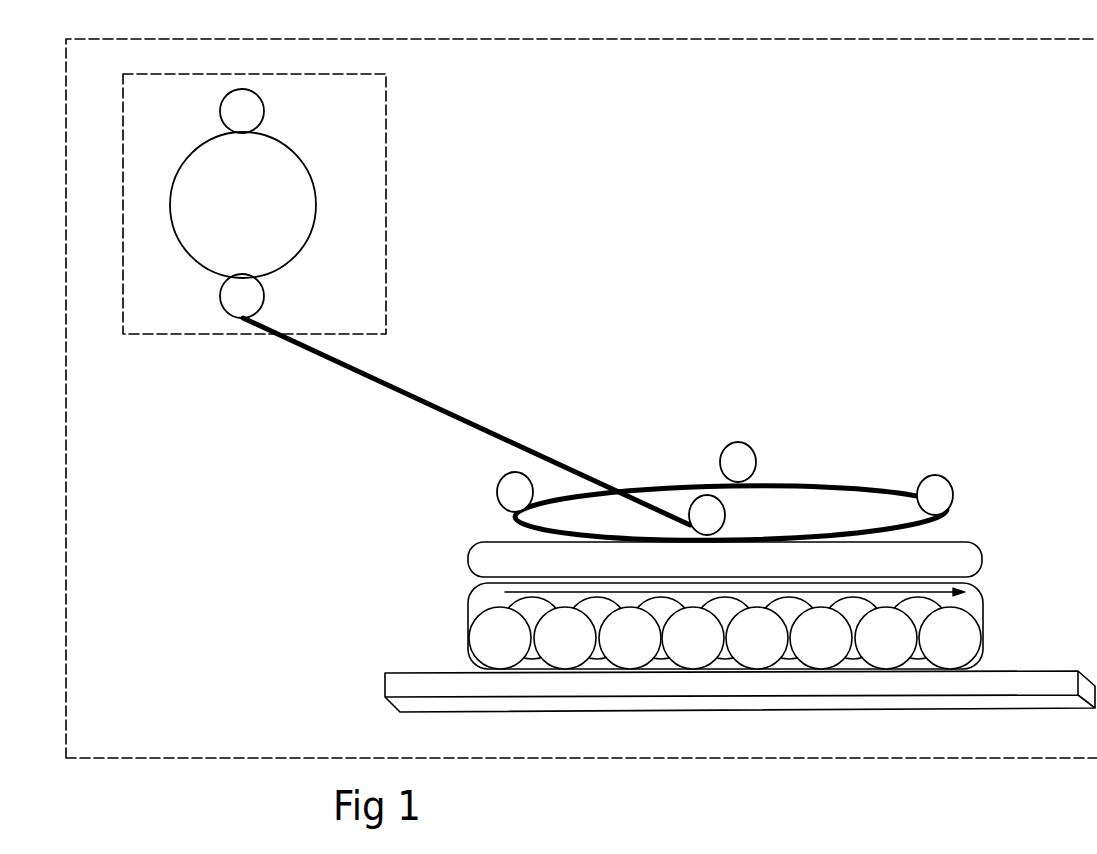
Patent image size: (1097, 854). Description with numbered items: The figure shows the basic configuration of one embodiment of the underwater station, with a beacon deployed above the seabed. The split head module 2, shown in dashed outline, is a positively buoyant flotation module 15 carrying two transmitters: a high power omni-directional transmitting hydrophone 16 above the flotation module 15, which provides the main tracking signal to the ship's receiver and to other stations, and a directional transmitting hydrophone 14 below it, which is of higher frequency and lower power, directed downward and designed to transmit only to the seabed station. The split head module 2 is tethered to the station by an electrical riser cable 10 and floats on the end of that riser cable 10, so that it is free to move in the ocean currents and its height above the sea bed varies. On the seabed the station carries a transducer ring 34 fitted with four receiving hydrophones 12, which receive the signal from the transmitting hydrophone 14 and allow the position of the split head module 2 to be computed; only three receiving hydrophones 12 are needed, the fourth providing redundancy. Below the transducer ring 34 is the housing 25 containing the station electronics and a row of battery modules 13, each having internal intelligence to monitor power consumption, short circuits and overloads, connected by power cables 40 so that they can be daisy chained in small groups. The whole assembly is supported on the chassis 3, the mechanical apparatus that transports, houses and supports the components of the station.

The split head module 2 is at (386, 270).
The chassis 3 is at (1043, 672).
The riser cable 10 is at (482, 422).
The receiving hydrophone 12 is at (497, 487).
The battery module 13 is at (633, 650).
The transmitting hydrophone 14 is at (223, 303).
The flotation module 15 is at (313, 177).
The transmitting hydrophone 16 is at (265, 103).
The housing 25 is at (957, 645).
The transducer ring 34 is at (818, 480).
The power cable 40 is at (585, 597).